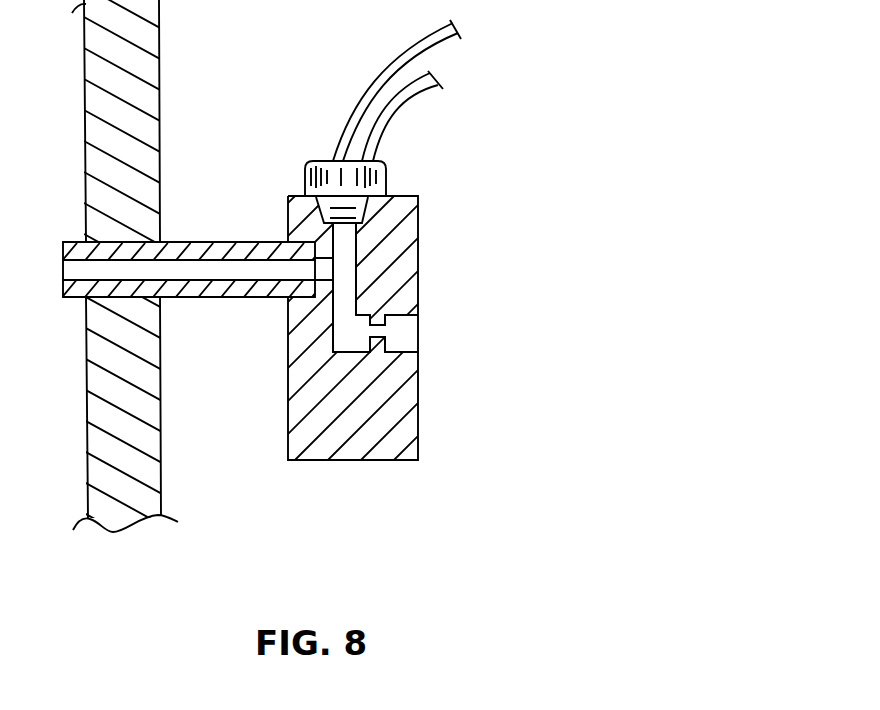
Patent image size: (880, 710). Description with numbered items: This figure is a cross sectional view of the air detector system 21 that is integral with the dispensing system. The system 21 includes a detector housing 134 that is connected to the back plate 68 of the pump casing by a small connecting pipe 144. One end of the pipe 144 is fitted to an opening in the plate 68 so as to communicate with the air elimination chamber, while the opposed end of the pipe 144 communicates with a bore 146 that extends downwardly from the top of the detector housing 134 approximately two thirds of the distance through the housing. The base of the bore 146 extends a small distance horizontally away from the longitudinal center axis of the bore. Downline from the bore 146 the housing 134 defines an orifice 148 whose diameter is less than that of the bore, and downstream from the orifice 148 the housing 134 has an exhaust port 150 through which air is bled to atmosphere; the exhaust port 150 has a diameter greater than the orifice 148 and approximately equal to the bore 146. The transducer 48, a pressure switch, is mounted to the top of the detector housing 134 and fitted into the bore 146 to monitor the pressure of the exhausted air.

The air detector system 21 is at (470, 172).
The transducer 48 is at (378, 164).
The back plate 68 is at (152, 138).
The detector housing 134 is at (345, 452).
The connecting pipe 144 is at (204, 256).
The bore 146 is at (345, 305).
The orifice 148 is at (383, 333).
The exhaust port 150 is at (405, 340).